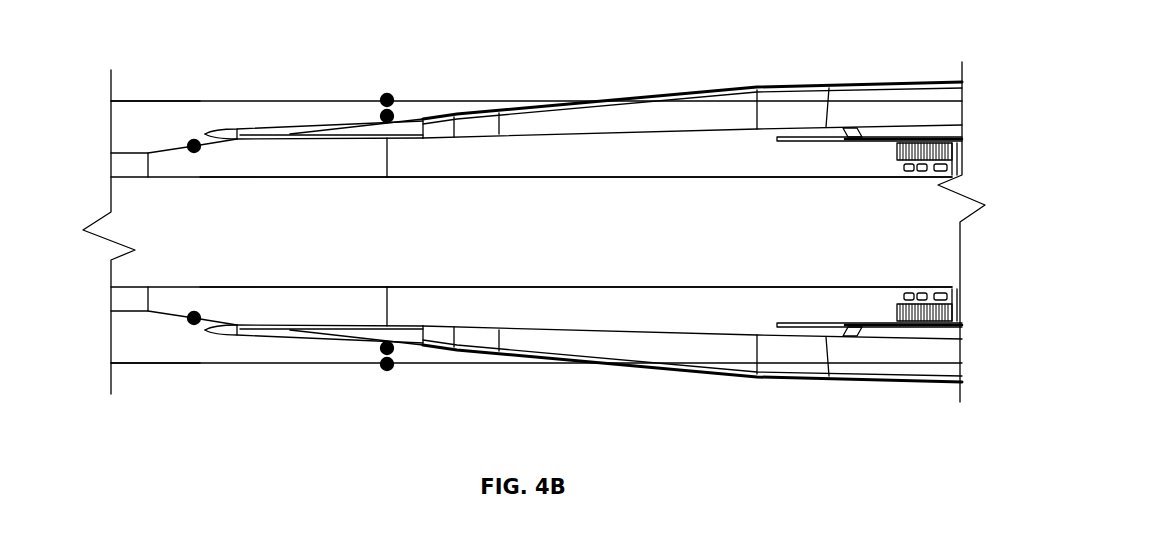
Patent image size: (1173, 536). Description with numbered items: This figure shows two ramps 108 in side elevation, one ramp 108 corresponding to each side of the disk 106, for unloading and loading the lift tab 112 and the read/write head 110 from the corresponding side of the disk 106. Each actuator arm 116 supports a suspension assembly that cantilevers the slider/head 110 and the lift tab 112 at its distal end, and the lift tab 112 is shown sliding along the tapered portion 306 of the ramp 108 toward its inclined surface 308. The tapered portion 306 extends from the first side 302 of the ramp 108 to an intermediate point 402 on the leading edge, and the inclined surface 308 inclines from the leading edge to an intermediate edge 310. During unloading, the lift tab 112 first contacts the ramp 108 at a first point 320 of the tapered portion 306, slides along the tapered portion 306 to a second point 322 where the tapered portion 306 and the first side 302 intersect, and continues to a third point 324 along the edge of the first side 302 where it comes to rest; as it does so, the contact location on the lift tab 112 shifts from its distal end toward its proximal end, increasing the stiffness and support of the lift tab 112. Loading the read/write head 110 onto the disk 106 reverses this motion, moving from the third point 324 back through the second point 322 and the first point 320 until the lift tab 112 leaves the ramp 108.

The disk 106 is at (503, 234).
The ramp 108 is at (204, 73).
The slider/head 110 is at (899, 152).
The lift tab 112 is at (292, 137).
The actuator arm 116 is at (657, 94).
The first side 302 is at (388, 158).
The tapered portion 306 is at (297, 170).
The inclined surface 308 is at (137, 128).
The intermediate edge 310 is at (111, 101).
The first point 320 is at (197, 150).
The second point 322 is at (393, 111).
The third point 324 is at (391, 93).
The intermediate point/edge 402 is at (147, 163).